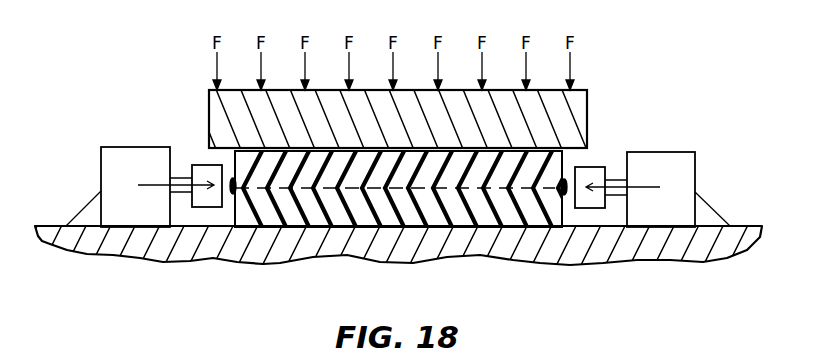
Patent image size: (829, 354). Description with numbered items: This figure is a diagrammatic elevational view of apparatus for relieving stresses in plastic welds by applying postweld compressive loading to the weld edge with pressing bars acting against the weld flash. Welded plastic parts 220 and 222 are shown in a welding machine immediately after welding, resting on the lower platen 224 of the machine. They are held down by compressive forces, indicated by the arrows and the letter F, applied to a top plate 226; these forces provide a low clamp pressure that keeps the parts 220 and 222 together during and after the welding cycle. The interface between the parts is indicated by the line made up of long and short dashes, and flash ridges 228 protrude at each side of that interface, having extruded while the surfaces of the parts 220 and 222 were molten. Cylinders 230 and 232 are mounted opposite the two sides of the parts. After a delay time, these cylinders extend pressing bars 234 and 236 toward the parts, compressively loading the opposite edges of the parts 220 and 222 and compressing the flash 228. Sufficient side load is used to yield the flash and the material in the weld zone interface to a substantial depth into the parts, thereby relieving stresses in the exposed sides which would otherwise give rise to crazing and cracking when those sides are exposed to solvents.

The welded plastic part 220 is at (331, 176).
The welded plastic part 222 is at (479, 211).
The lower platen 224 is at (703, 253).
The top plate 226 is at (585, 92).
The flash ridge 228 is at (233, 192).
The cylinder 230 is at (116, 147).
The cylinder 232 is at (695, 151).
The pressing bar 234 is at (195, 165).
The pressing bar 236 is at (600, 167).